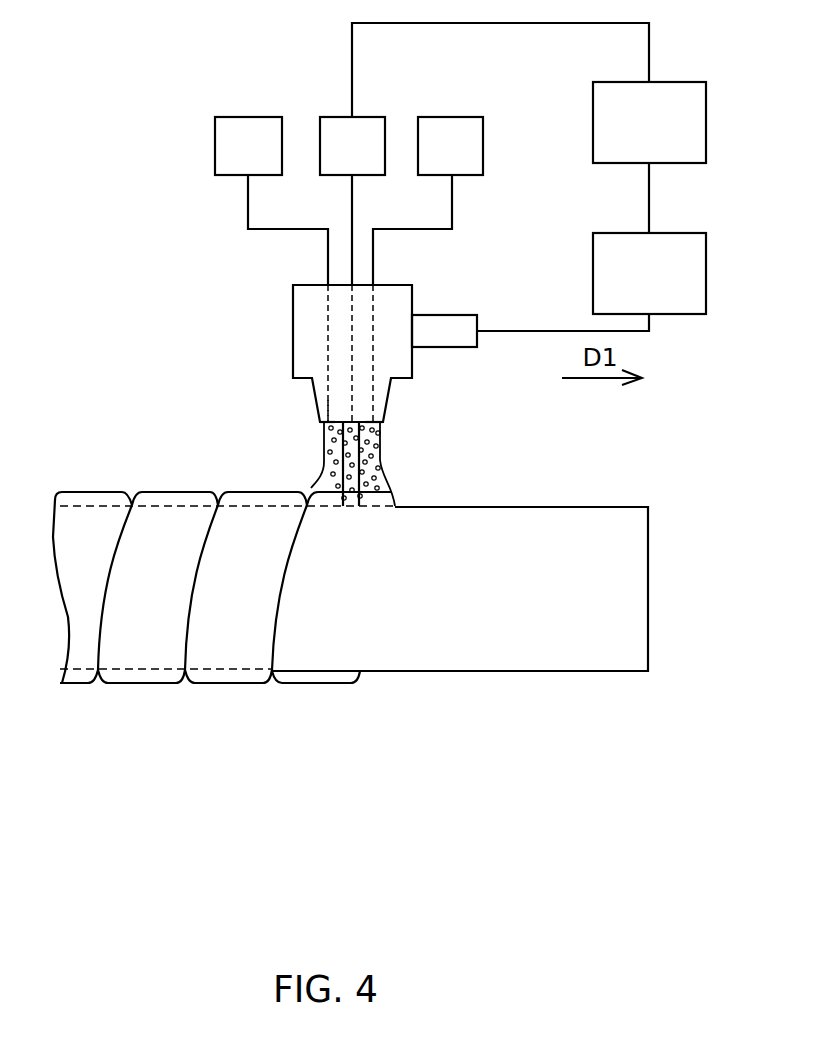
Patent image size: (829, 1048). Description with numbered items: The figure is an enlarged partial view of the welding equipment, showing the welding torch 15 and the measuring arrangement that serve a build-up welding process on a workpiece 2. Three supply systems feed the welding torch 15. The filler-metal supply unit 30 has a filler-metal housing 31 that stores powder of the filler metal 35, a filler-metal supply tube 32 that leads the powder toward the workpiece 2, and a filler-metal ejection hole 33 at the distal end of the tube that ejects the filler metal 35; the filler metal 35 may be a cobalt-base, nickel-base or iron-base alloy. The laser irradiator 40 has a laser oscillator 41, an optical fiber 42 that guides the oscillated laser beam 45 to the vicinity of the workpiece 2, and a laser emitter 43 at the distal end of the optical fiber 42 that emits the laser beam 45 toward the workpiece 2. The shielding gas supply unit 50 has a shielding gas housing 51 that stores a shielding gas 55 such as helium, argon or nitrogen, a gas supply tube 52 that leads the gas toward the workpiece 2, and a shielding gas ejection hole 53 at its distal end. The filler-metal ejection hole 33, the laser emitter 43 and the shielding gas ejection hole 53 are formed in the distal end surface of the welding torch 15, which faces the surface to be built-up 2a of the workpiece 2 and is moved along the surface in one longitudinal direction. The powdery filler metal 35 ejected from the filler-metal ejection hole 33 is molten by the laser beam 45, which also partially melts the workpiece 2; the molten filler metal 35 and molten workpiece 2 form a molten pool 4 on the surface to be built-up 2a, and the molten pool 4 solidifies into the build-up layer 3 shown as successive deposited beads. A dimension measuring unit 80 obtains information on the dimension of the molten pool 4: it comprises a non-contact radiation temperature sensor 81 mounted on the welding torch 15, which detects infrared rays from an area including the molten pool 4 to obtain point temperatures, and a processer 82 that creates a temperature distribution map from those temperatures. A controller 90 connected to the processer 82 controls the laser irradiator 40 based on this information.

The workpiece 2 is at (380, 557).
The surface to be built-up 2a is at (625, 505).
The build-up layer 3 is at (242, 707).
The molten pool 4 is at (378, 500).
The welding torch 15 is at (293, 298).
The filler-metal supply unit 30 is at (483, 114).
The filler-metal housing 31 is at (472, 115).
The filler-metal supply tube 32 is at (417, 233).
The filler-metal ejection hole 33 is at (373, 420).
The filler metal 35 is at (367, 447).
The laser irradiator 40 is at (384, 114).
The laser oscillator 41 is at (373, 116).
The optical fiber 42 is at (350, 203).
The laser emitter 43 is at (347, 412).
The laser beam 45 is at (340, 453).
The shielding gas supply unit 50 is at (245, 105).
The shielding gas housing 51 is at (243, 116).
The gas supply tube 52 is at (247, 203).
The shielding gas ejection hole 53 is at (325, 422).
The shielding gas 55 is at (330, 475).
The dimension measuring unit 80 is at (590, 294).
The temperature sensor 81 is at (468, 348).
The processer 82 is at (706, 270).
The controller 90 is at (706, 123).